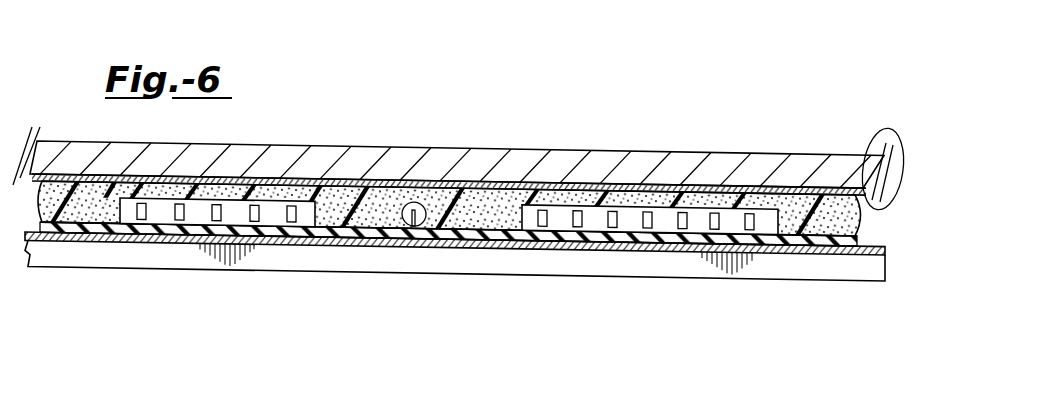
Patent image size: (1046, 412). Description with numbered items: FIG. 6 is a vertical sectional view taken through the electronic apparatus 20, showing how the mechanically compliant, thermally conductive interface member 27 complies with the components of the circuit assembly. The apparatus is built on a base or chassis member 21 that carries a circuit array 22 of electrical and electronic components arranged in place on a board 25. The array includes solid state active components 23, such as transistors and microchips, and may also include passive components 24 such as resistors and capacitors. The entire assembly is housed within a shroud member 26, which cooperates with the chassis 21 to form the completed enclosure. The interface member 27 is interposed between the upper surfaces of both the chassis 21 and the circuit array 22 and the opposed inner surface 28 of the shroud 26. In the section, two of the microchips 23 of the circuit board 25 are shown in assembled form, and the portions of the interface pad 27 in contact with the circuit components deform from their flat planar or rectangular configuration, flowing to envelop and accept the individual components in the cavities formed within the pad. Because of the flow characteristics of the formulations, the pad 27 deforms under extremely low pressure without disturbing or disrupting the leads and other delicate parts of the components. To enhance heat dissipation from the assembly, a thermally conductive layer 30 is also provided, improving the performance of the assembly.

The electronic apparatus 20 is at (502, 178).
The base or chassis member 21 is at (378, 261).
The circuit array 22 is at (504, 258).
The solid state active components 23 is at (207, 198).
The passive components 24 is at (413, 201).
The board 25 is at (463, 217).
The shroud member 26 is at (738, 154).
The compliant thermally conductive interface member 27 is at (467, 186).
The inner surface of shroud 28 is at (897, 146).
The thermally conductive layer 30 is at (660, 252).